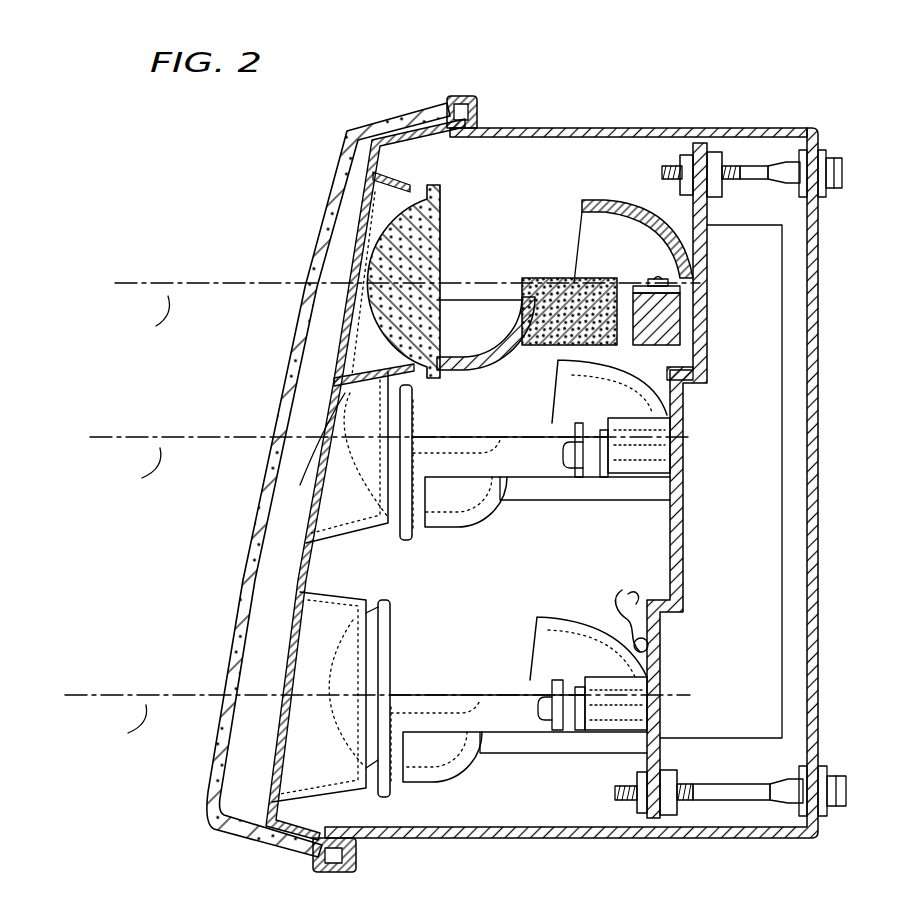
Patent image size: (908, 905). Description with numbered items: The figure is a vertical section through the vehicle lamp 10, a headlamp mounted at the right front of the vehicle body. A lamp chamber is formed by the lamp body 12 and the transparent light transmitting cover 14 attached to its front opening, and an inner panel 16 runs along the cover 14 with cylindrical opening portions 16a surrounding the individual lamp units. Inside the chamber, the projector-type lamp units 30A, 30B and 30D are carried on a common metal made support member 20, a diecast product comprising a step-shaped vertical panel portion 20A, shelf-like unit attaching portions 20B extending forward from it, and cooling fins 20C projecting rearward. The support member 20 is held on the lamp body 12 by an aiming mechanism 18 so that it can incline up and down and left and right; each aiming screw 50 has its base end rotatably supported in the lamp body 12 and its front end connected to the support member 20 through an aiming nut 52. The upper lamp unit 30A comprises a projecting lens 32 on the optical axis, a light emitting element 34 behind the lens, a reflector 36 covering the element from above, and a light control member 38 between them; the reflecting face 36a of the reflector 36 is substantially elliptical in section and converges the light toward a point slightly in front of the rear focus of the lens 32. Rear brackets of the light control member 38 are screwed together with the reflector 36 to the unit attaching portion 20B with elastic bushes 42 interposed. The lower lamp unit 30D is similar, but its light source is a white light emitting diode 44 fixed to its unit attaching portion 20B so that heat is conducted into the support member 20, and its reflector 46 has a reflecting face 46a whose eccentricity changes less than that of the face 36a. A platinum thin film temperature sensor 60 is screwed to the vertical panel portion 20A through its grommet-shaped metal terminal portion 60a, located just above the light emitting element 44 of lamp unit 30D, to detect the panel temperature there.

The vehicle lamp 10 is at (282, 196).
The lamp body 12 is at (835, 410).
The light transmitting cover 14 is at (265, 406).
The inner panel 16 is at (280, 557).
The cylindrical opening portion 16a is at (370, 377).
The aiming mechanism 18 is at (665, 148).
The metal made support member 20 is at (716, 358).
The vertical panel portion 20A is at (684, 462).
The unit attaching portion 20B is at (663, 322).
The cooling fin 20C is at (768, 643).
The lamp unit 30A is at (508, 190).
The lamp unit 30B is at (608, 514).
The lamp unit 30D is at (440, 607).
The projecting lens 32 is at (428, 257).
The light emitting element 34 is at (655, 278).
The reflector 36 is at (625, 205).
The reflecting face 36a is at (593, 215).
The light control member 38 is at (543, 323).
The elastic bush 42 is at (580, 734).
The light emitting element 44 is at (592, 652).
The reflector 46 is at (563, 613).
The reflecting face 46a is at (540, 642).
The aiming screw 50 is at (752, 164).
The aiming nut 52 is at (717, 192).
The temperature sensor 60 is at (610, 614).
The metal terminal portion 60a is at (650, 647).